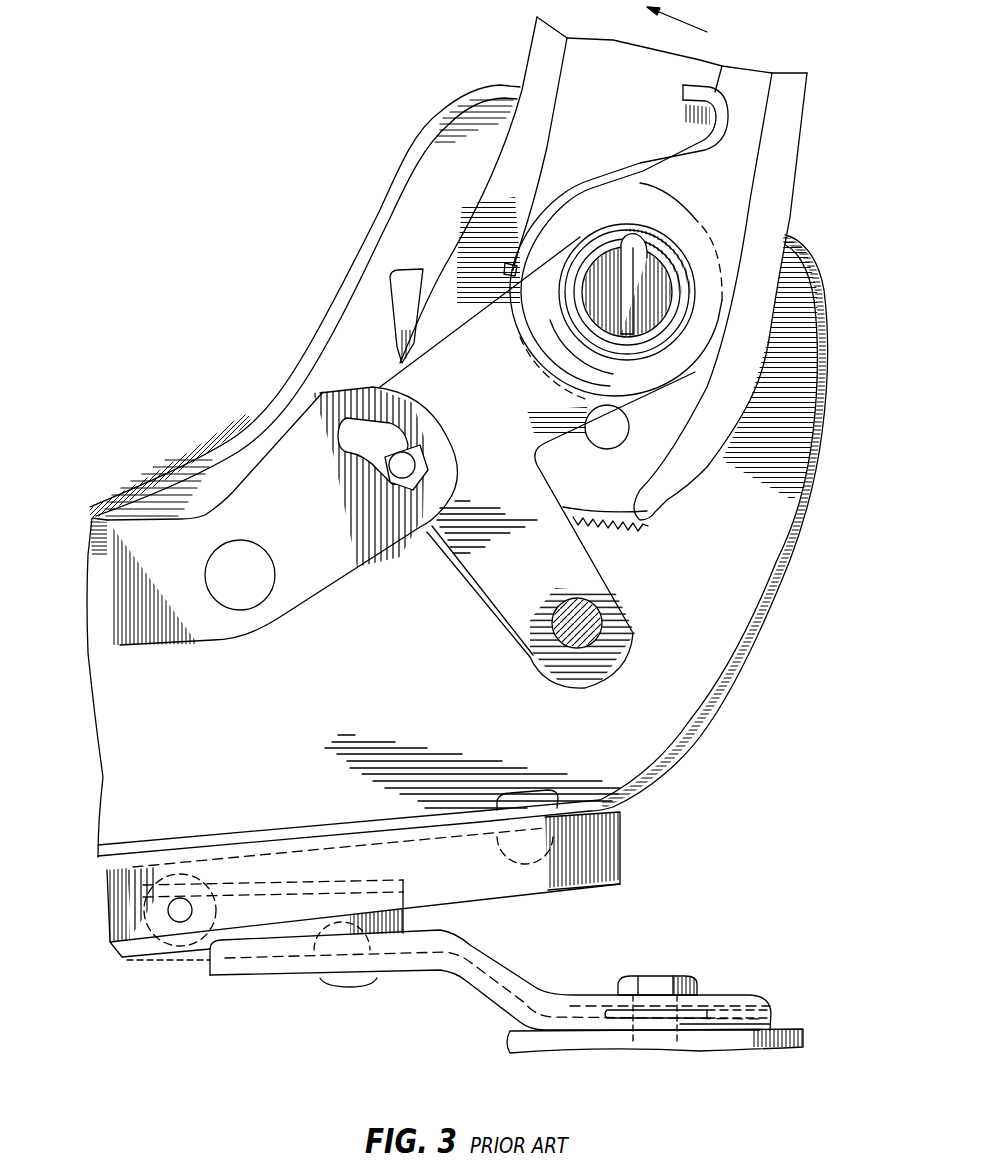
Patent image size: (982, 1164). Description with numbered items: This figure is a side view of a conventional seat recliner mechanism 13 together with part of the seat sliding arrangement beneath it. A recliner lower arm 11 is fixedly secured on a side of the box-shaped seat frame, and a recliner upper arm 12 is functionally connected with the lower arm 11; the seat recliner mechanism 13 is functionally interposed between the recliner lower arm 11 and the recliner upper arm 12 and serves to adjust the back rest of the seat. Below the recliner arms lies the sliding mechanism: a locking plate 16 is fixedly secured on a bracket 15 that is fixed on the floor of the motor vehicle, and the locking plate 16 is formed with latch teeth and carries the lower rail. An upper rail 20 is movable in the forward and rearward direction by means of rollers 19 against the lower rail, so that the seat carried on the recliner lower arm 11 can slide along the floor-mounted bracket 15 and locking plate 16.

The recliner lower arm 11 is at (214, 757).
The recliner upper arm 12 is at (747, 80).
The seat recliner mechanism 13 is at (697, 597).
The bracket 15 is at (475, 980).
The locking plate 16 is at (173, 955).
The roller 19 is at (160, 940).
The upper rail 20 is at (623, 857).